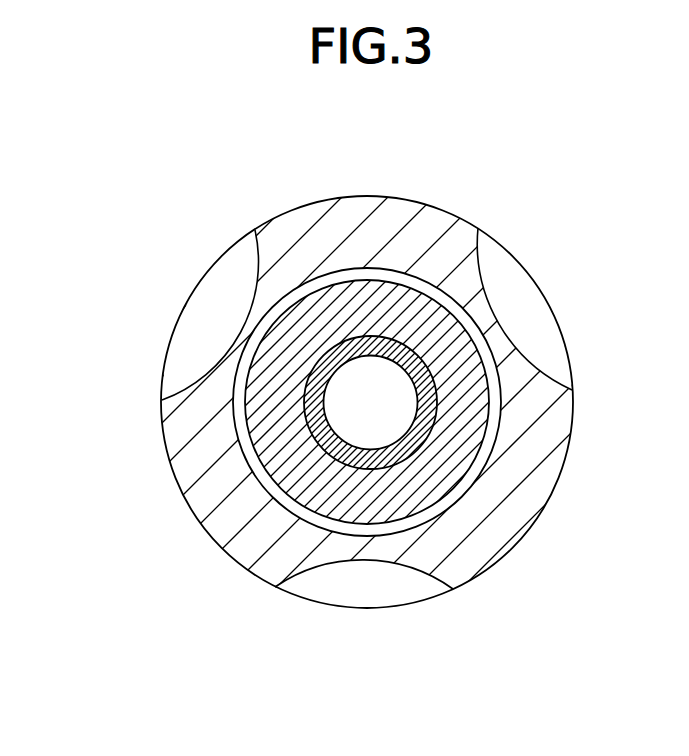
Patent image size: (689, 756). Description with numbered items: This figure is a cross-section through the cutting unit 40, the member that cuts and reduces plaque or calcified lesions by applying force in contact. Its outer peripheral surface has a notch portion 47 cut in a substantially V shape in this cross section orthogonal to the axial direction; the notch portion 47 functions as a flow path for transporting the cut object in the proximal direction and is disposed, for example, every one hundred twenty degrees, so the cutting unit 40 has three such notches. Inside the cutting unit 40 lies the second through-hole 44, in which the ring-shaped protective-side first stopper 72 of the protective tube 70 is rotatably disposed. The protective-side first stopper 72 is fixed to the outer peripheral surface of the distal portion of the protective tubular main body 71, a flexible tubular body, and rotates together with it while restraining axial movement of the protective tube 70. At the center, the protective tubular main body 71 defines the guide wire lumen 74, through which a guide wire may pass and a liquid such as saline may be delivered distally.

The cutting unit 40 is at (288, 207).
The second through-hole 44 is at (240, 378).
The notch portion 47 is at (226, 320).
The protective tube 70 is at (445, 302).
The protective-side first stopper 72 is at (355, 296).
The guide wire lumen 74 is at (323, 418).
The protective tubular main body 71 is at (362, 409).